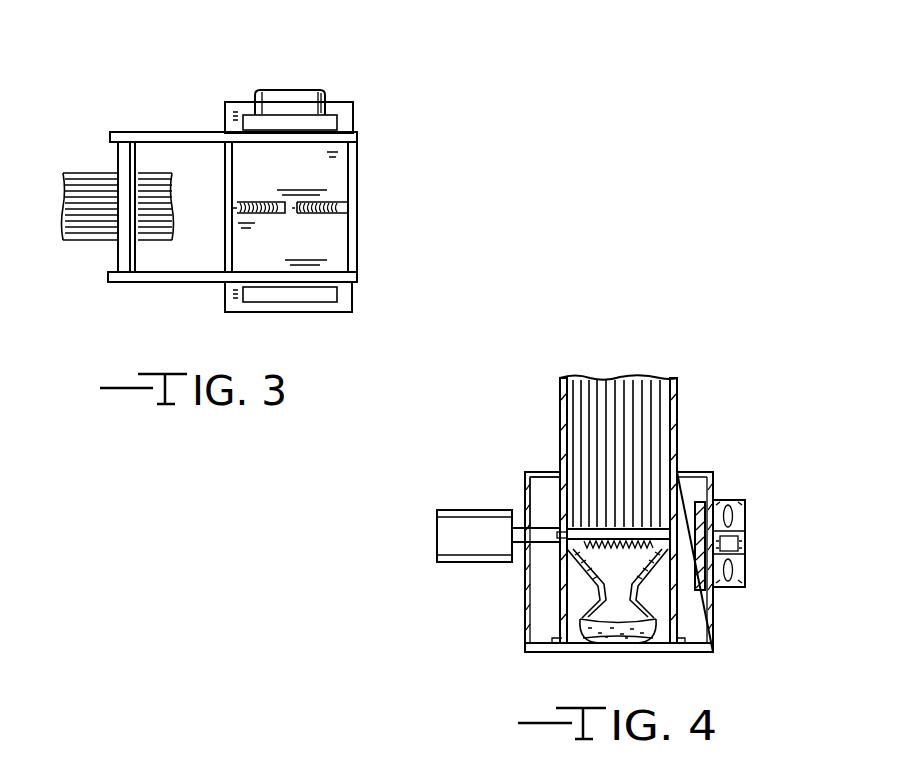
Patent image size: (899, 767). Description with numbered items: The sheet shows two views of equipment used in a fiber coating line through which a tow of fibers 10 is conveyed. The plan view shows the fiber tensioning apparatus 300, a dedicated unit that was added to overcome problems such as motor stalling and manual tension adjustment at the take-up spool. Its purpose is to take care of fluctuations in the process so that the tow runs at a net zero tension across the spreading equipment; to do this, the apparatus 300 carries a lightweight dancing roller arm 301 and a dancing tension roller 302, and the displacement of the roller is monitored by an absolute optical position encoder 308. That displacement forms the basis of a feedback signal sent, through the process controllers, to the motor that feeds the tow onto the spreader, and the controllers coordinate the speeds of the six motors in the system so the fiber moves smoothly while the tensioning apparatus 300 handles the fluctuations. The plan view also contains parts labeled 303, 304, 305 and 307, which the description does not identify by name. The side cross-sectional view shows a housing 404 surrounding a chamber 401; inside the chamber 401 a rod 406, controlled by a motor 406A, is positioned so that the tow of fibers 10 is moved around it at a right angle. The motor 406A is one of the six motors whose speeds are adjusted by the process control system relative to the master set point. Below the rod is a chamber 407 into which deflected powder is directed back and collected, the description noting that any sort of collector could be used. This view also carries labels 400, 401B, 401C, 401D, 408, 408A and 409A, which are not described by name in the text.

In FIG. 3, the tow of fibers 10 is at (80, 240).
In FIG. 4, the tow of fibers 10 is at (615, 378).
In FIG. 3, the fiber tensioning apparatus 300 is at (268, 77).
In FIG. 3, the dancing roller arm 301 is at (183, 132).
In FIG. 3, the dancing tension roller 302 is at (118, 162).
In FIG. 3, the end block 303 is at (347, 117).
In FIG. 3, the spring 304 is at (328, 213).
In FIG. 3, the spring 305 is at (260, 203).
In FIG. 3, the frame wall 307 is at (225, 182).
In FIG. 3, the optical position encoder 308 is at (290, 107).
In FIG. 4, the cutting assembly 400 is at (678, 350).
In FIG. 4, the chamber 401 is at (678, 403).
In FIG. 4, the cutter plate 401B is at (655, 573).
In FIG. 4, the left inner wall 401C is at (560, 597).
In FIG. 4, the right inner wall 401D is at (677, 603).
In FIG. 4, the housing 404 is at (703, 653).
In FIG. 4, the rod 406 is at (575, 538).
In FIG. 4, the motor 406A is at (437, 533).
In FIG. 4, the chamber 407 is at (647, 653).
In FIG. 4, the adjustment knob 408 is at (745, 547).
In FIG. 4, the adjustment plate 408A is at (697, 500).
In FIG. 4, the side compartment 409A is at (545, 487).